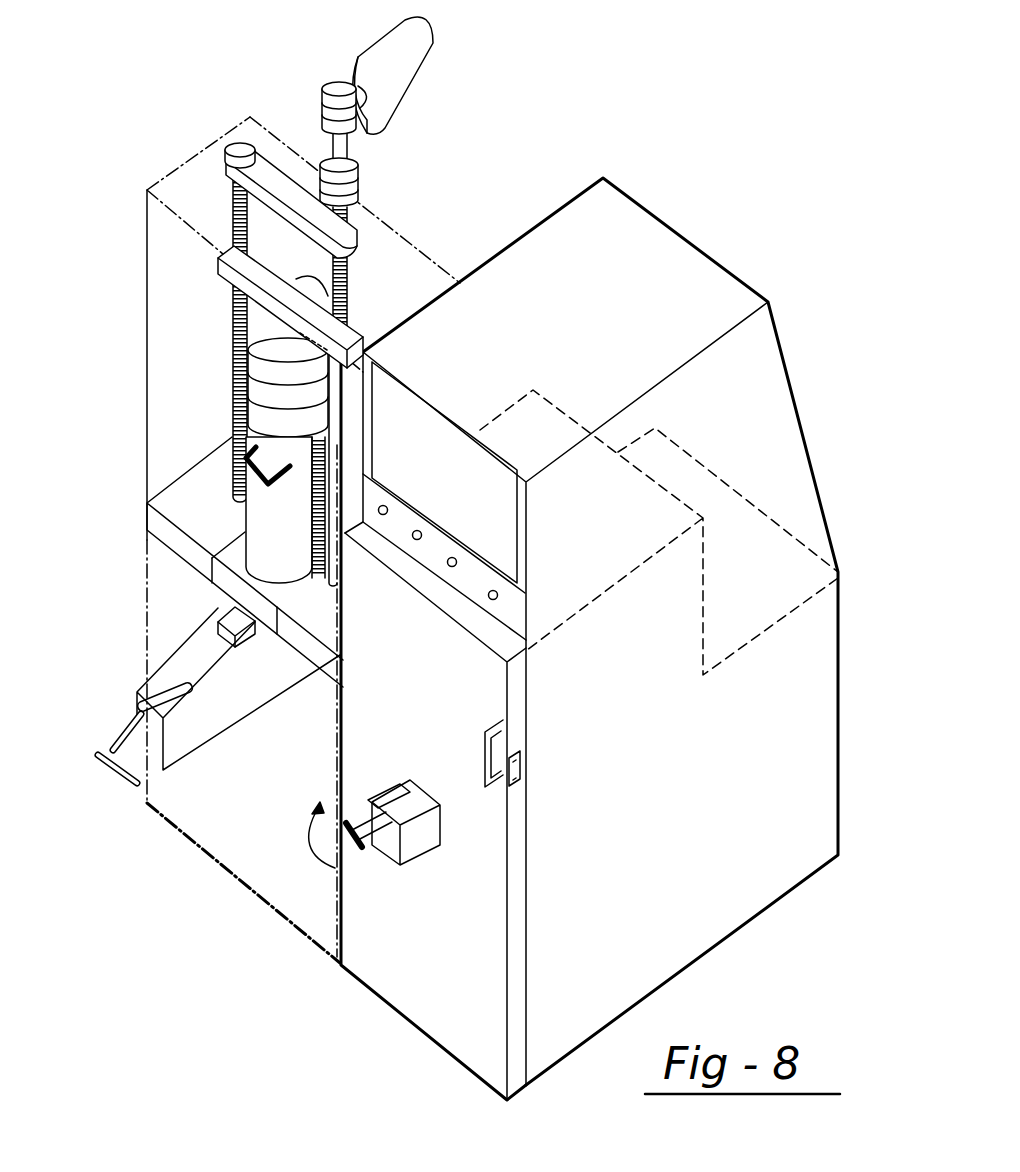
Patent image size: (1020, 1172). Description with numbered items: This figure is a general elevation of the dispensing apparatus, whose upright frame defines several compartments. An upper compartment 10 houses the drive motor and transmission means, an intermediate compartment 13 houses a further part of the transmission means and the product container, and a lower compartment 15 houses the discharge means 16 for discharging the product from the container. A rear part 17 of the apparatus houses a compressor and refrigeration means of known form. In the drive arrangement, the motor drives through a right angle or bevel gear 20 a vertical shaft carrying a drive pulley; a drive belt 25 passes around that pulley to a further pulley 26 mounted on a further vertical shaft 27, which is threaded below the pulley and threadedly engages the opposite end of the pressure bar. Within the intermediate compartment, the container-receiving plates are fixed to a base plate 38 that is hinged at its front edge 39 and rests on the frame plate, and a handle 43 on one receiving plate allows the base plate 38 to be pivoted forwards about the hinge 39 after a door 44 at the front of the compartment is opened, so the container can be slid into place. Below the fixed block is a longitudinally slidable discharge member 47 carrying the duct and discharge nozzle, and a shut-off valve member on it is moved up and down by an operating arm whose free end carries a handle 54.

The upper compartment 10 is at (208, 163).
The intermediate compartment 13 is at (148, 341).
The lower compartment 15 is at (170, 632).
The discharge means 16 is at (425, 877).
The rear part 17 is at (797, 746).
The right angle or bevel gear 20 is at (338, 88).
The drive belt 25 is at (283, 167).
The further pulley 26 is at (237, 145).
The further vertical shaft 27 is at (230, 213).
The base plate 38 is at (230, 556).
The front edge (hinge) 39 is at (211, 586).
The handle 43 is at (233, 447).
The door 44 is at (517, 798).
The discharge member 47 is at (180, 730).
The handle 54 is at (103, 750).